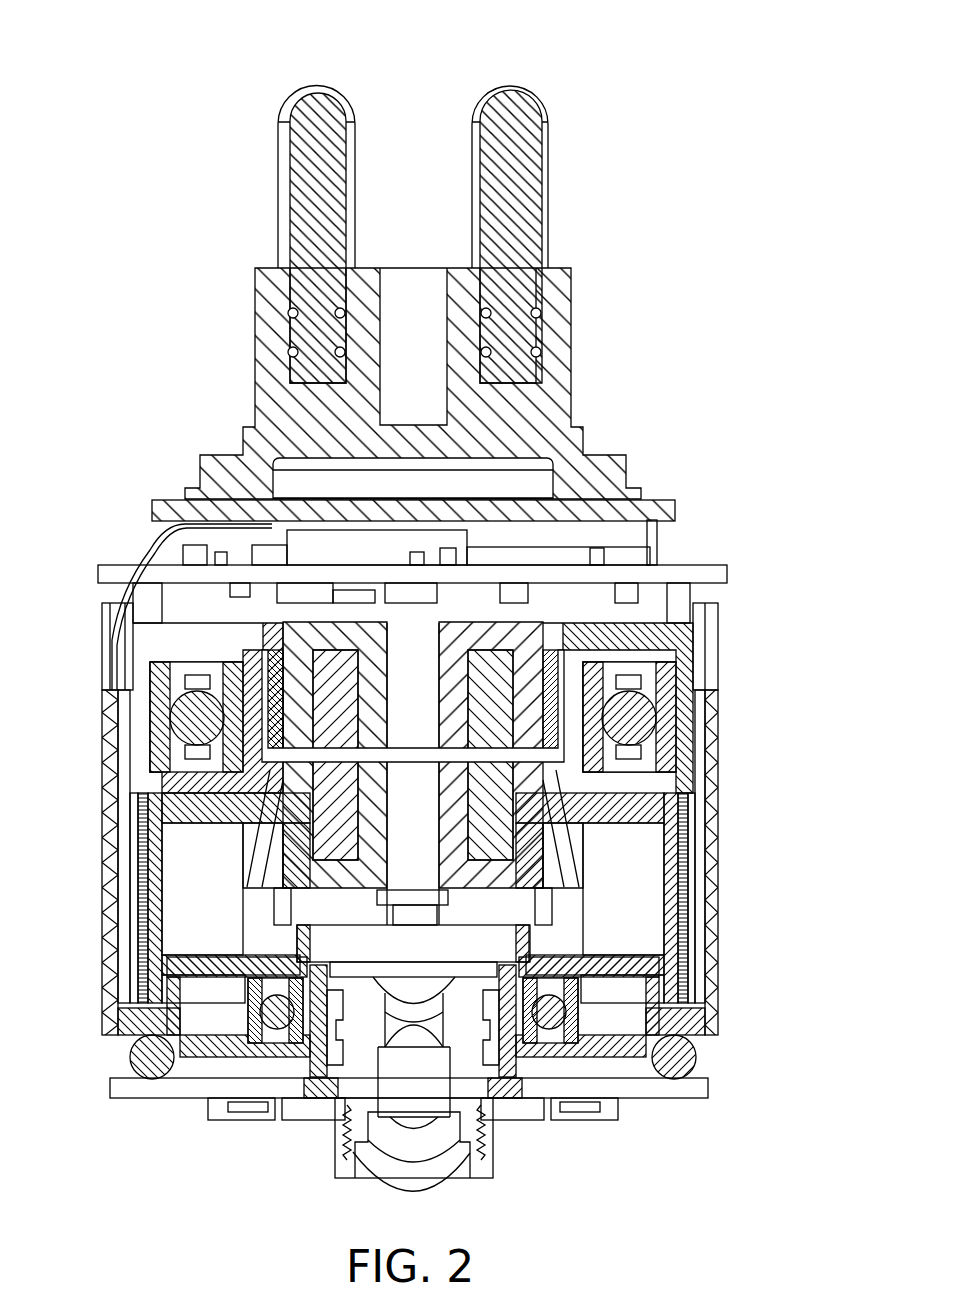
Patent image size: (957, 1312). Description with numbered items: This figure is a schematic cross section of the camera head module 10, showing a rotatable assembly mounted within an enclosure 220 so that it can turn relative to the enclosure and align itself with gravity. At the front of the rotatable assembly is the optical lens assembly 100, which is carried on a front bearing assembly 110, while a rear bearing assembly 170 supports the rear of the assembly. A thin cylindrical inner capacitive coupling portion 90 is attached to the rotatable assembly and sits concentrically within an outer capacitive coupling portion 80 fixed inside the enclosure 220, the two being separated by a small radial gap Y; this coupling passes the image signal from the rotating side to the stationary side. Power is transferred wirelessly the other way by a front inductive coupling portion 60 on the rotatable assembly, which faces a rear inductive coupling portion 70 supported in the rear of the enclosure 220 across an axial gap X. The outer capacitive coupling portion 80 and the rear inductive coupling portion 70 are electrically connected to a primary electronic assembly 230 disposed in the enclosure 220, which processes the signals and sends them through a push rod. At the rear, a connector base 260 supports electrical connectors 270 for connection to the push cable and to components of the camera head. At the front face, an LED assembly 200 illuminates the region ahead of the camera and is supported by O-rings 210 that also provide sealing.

The camera head module 10 is at (129, 60).
The electrical connectors 270 is at (296, 136).
The connector base 260 is at (535, 412).
The primary electronic assembly 230 is at (590, 572).
The front inductive coupling portion 60 is at (366, 726).
The rear inductive coupling portion 70 is at (377, 802).
The rear bearing assembly 170 is at (186, 715).
The inner capacitive coupling portion 90 is at (146, 830).
The radial gap Y is at (130, 874).
The outer capacitive coupling portion 80 is at (116, 888).
The axial gap X is at (530, 755).
The enclosure 220 is at (118, 1012).
The O-rings 210 is at (152, 1060).
The LED assembly 200 is at (128, 1090).
The front bearing assembly 110 is at (250, 1015).
The optical lens assembly 100 is at (426, 1138).